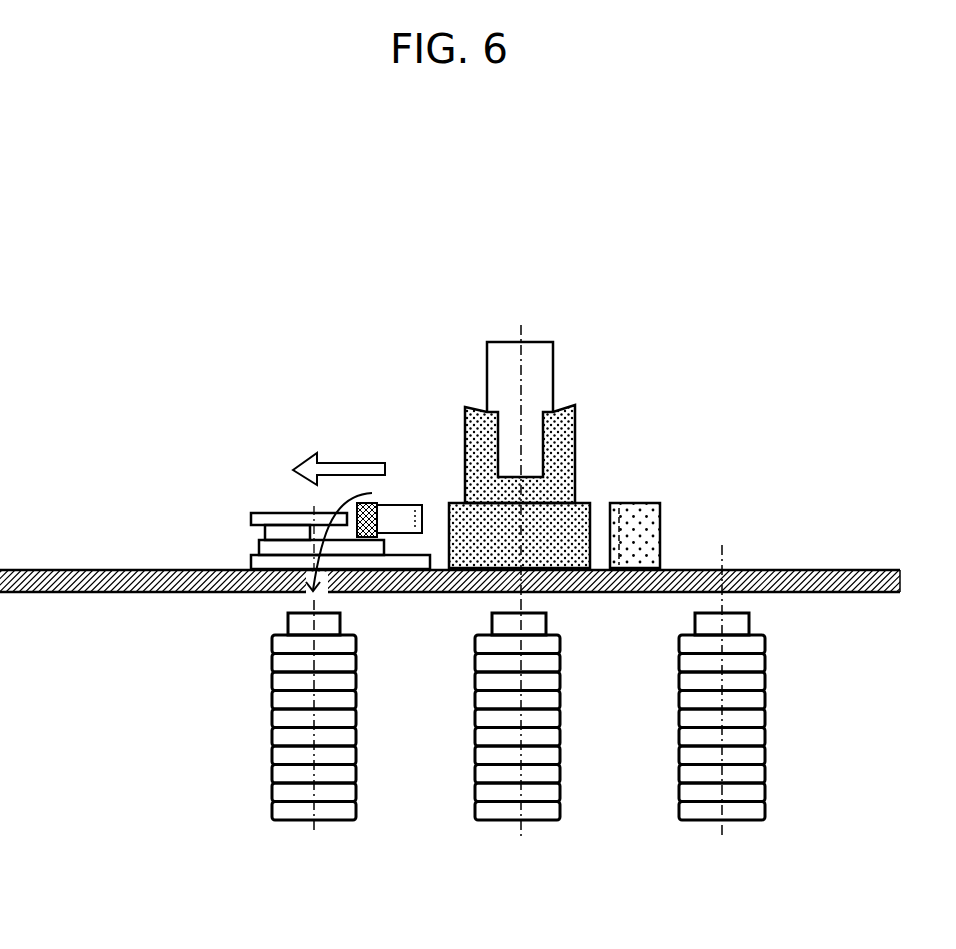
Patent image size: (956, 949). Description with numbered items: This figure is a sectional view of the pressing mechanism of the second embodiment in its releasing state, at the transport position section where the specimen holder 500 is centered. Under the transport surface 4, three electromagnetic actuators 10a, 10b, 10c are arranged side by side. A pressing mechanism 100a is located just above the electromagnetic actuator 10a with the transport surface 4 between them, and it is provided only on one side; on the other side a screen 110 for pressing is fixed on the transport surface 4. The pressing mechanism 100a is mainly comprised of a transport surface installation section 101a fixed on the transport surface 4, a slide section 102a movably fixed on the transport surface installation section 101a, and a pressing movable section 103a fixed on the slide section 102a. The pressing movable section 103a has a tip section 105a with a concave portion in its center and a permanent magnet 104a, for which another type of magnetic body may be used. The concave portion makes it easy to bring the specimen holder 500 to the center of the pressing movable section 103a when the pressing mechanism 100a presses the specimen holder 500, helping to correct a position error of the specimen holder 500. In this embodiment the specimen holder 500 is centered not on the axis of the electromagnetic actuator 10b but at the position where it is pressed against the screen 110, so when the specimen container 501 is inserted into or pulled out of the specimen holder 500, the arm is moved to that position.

The transport surface 4 is at (118, 592).
The electromagnetic actuator 10a is at (295, 828).
The electromagnetic actuator 10b is at (520, 828).
The electromagnetic actuator 10c is at (715, 828).
The pressing mechanism 100a is at (248, 437).
The transport surface installation section 101a is at (250, 562).
The slide section 102a is at (258, 540).
The pressing movable section 103a is at (289, 513).
The permanent magnet 104a is at (368, 503).
The tip section 105a is at (400, 505).
The screen 110 is at (660, 503).
The specimen holder 500 is at (472, 403).
The specimen container 501 is at (542, 337).